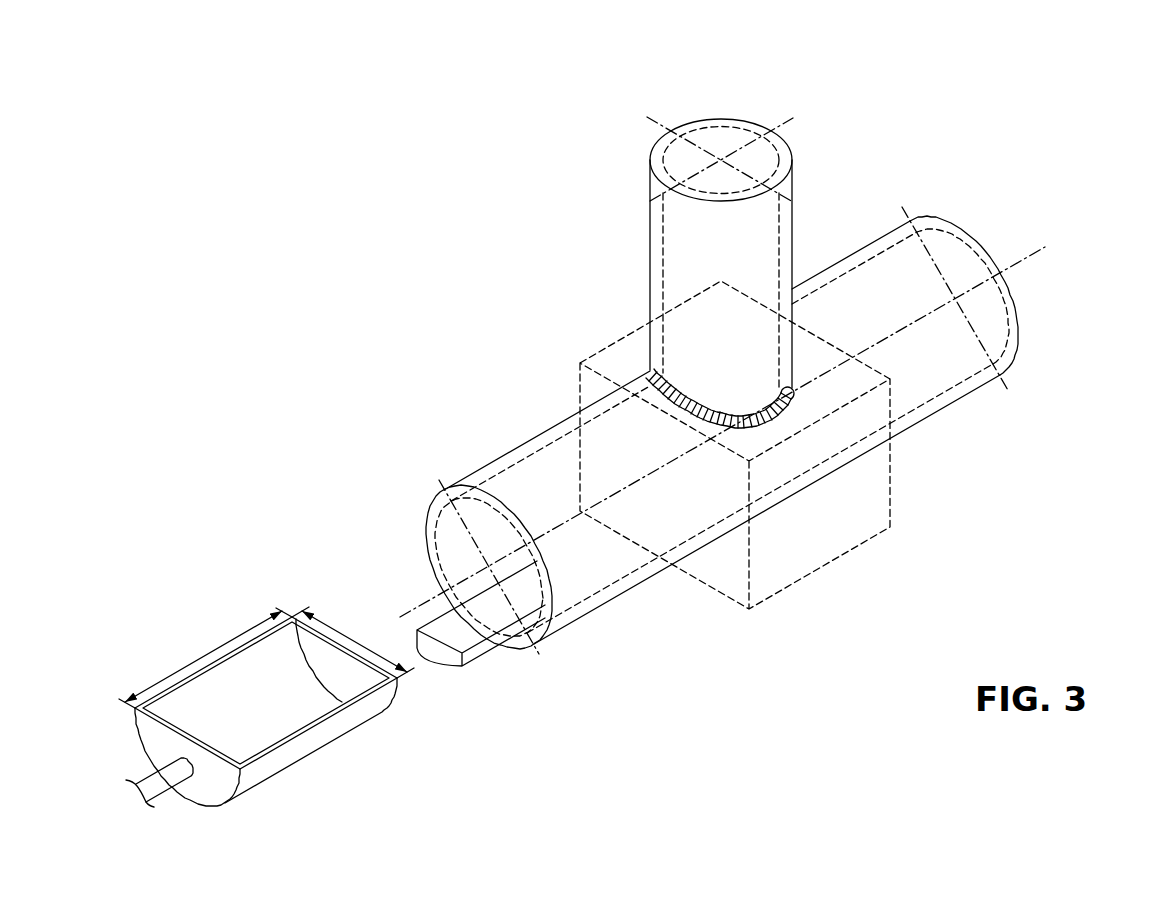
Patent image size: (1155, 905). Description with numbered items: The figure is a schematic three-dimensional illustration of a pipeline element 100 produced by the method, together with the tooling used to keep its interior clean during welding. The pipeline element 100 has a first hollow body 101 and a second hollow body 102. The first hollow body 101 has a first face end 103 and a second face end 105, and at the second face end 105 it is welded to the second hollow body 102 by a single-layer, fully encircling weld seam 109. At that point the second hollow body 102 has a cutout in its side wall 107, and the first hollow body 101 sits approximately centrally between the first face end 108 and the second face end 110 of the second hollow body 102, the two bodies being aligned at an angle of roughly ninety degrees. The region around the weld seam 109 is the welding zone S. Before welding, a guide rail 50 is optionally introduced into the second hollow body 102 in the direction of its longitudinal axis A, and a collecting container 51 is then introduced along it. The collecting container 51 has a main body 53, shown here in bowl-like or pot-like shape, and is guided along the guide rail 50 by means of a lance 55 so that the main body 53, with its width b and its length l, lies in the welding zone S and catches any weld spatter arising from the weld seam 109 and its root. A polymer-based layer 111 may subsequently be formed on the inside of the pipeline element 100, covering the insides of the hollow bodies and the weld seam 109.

The pipeline element 100 is at (348, 222).
The first hollow body 101 is at (795, 222).
The second hollow body 102 is at (597, 580).
The first face end of first hollow body 103 is at (686, 110).
The second face end of first hollow body 105 is at (701, 357).
The side wall of hollow body 107 is at (649, 278).
The first face end of second hollow body 108 is at (414, 567).
The weld seam 109 is at (781, 422).
The second face end of second hollow body 110 is at (1038, 297).
The polymer-based layer 111 is at (649, 222).
The welding zone S is at (882, 482).
The longitudinal axis A is at (547, 527).
The guide rail 50 is at (484, 653).
The collecting container 51 is at (293, 769).
The main body 53 is at (263, 658).
The lance 55 is at (151, 788).
The length of collecting container l is at (203, 651).
The width of collecting container b is at (352, 609).